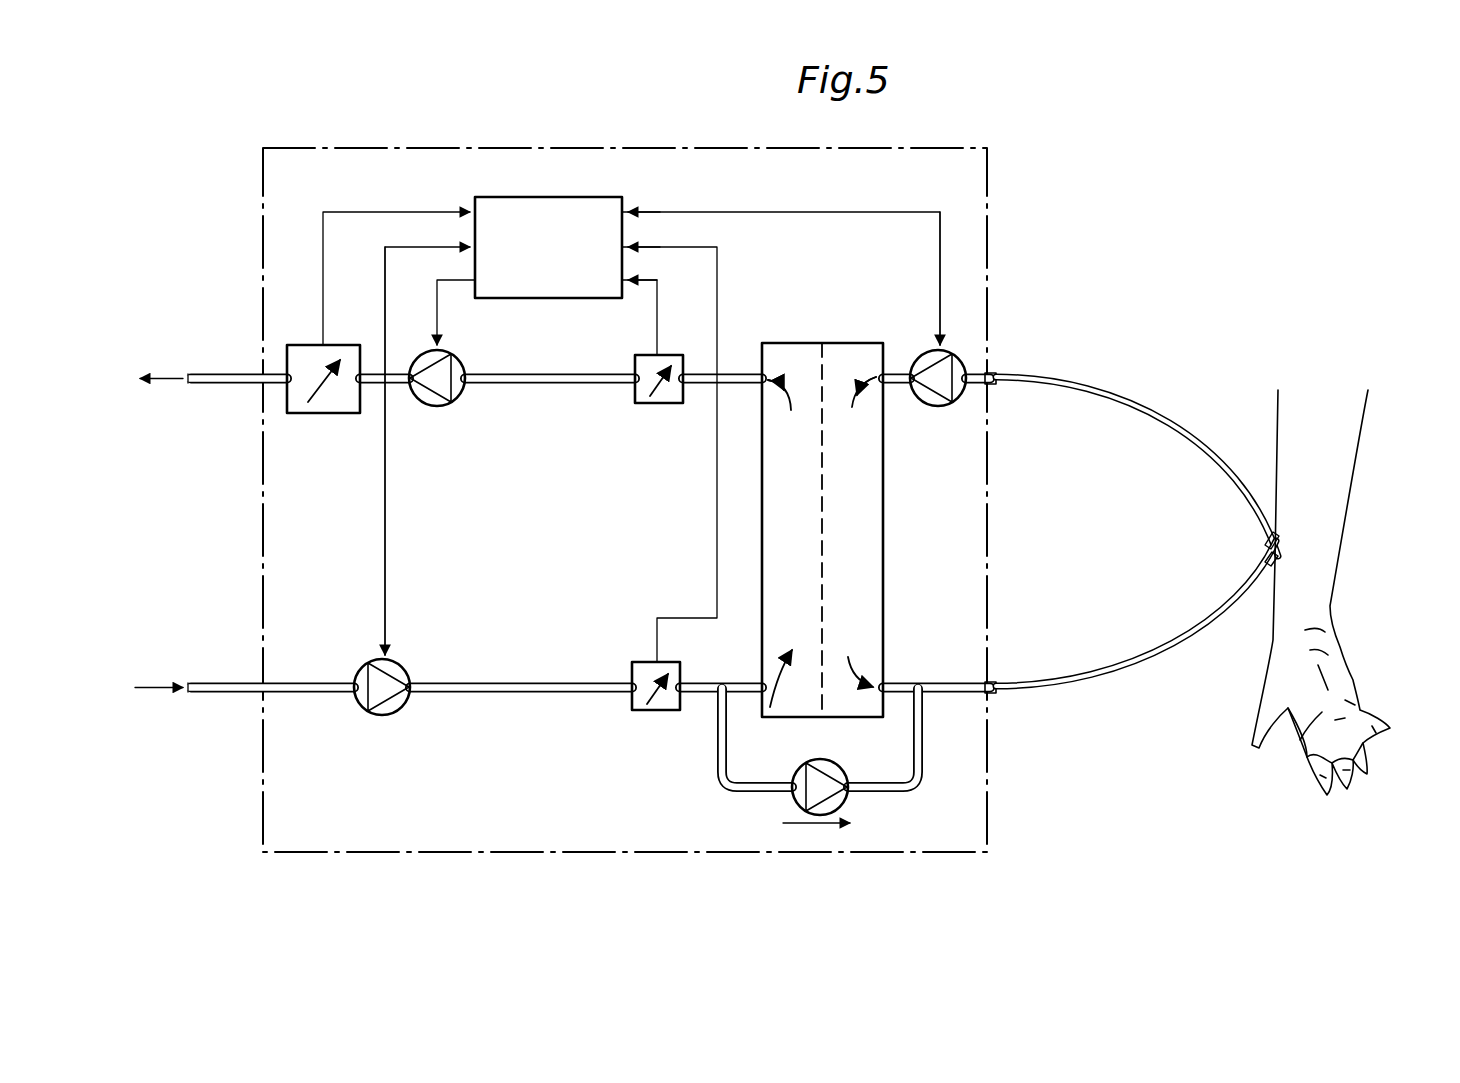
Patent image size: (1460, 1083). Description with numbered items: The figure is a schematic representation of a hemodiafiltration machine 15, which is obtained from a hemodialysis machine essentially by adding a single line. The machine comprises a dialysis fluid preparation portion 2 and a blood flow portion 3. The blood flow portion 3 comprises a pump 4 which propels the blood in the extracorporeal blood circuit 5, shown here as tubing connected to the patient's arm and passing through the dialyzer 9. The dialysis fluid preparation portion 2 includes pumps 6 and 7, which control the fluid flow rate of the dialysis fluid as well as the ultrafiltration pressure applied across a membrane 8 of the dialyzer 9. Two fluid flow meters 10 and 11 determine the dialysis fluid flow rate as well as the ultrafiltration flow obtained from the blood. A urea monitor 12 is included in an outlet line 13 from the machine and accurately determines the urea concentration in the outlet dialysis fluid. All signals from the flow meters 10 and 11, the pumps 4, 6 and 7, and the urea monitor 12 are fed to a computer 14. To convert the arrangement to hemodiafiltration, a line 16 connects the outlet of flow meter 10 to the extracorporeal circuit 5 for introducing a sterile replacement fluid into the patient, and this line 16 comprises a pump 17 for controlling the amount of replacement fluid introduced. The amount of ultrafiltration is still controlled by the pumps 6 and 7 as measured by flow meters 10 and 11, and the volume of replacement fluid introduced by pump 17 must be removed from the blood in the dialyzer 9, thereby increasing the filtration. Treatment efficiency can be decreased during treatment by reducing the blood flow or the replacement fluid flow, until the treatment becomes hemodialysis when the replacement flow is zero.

The dialysis fluid preparation portion 2 is at (690, 716).
The blood flow portion 3 is at (939, 703).
The pump 4 is at (932, 399).
The extracorporeal blood circuit 5 is at (1229, 592).
The pump 6 is at (400, 665).
The pump 7 is at (427, 400).
The membrane 8 is at (820, 362).
The dialyzer 9 is at (847, 358).
The fluid flow meter 10 is at (641, 673).
The fluid flow meter 11 is at (673, 389).
The urea monitor 12 is at (344, 400).
The outlet line 13 is at (232, 373).
The computer 14 is at (617, 197).
The hemodiafiltration machine 15 is at (597, 144).
The line 16 is at (745, 797).
The pump 17 is at (833, 769).